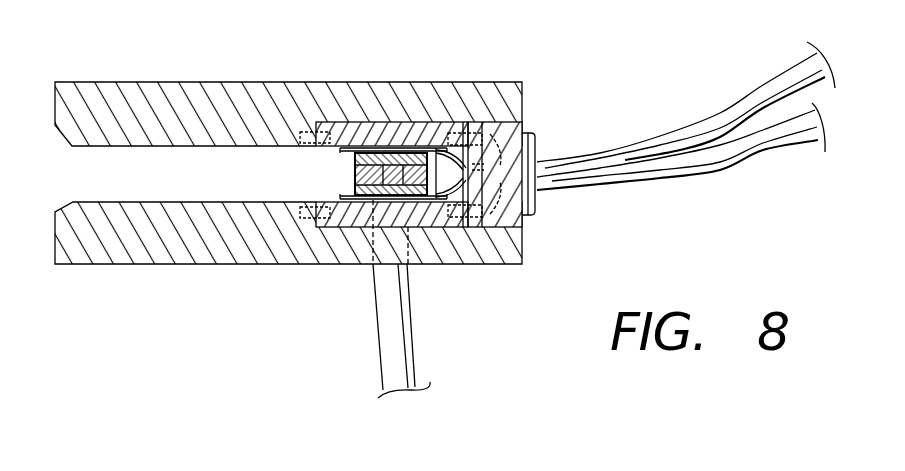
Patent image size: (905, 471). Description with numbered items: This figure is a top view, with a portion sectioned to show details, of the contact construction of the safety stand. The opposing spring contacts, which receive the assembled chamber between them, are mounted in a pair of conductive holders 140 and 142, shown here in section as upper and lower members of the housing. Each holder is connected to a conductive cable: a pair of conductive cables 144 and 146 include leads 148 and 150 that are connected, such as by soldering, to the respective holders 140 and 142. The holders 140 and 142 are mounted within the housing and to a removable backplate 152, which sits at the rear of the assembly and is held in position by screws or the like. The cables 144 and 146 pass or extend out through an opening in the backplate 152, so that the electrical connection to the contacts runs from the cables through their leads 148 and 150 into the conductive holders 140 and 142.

The conductive holder 140 is at (365, 123).
The conductive holder 142 is at (352, 222).
The conductive cable 144 is at (760, 88).
The conductive cable 146 is at (672, 178).
The lead 148 is at (463, 140).
The lead 150 is at (463, 210).
The removable backplate 152 is at (525, 218).